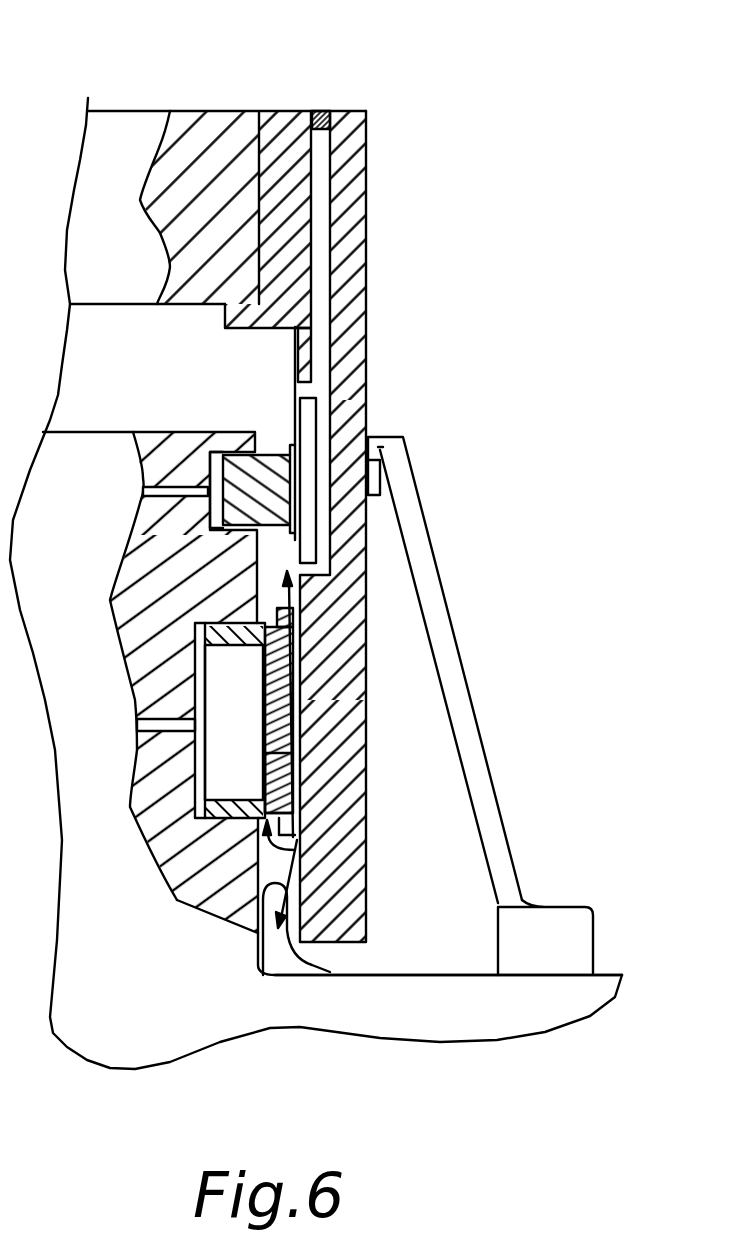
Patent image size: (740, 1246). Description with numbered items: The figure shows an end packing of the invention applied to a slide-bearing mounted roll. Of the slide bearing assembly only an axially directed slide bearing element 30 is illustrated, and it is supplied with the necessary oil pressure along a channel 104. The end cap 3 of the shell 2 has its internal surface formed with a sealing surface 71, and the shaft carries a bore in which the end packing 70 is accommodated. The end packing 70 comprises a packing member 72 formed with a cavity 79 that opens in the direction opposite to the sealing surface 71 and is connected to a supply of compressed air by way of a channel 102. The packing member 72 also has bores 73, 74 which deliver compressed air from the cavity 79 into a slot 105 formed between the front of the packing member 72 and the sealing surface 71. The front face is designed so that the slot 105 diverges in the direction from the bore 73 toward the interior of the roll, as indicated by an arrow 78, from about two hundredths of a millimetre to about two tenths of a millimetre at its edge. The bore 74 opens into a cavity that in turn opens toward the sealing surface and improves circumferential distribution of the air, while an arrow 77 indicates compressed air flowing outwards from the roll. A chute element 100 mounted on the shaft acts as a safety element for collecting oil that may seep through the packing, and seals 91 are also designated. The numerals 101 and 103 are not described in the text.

The shell 2 is at (138, 122).
The plug 103 is at (326, 112).
The end cap 3 is at (355, 912).
The pin 101 is at (328, 413).
The channel 104 is at (147, 510).
The channel 102 is at (137, 728).
The seals 91 is at (181, 898).
The slide bearing element 30 is at (268, 438).
The cavity 79 is at (229, 645).
The bore 73 is at (290, 737).
The bore 74 is at (288, 790).
The slot 105 is at (290, 682).
The arrow 77 is at (293, 598).
The packing member 72 is at (290, 820).
The end packing 70 is at (275, 838).
The arrow 78 is at (262, 955).
The chute element 100 is at (450, 658).
The sealing surface 71 is at (340, 977).